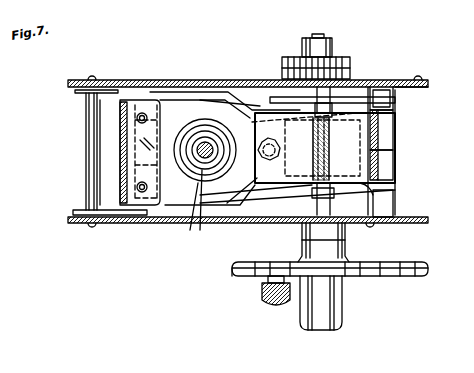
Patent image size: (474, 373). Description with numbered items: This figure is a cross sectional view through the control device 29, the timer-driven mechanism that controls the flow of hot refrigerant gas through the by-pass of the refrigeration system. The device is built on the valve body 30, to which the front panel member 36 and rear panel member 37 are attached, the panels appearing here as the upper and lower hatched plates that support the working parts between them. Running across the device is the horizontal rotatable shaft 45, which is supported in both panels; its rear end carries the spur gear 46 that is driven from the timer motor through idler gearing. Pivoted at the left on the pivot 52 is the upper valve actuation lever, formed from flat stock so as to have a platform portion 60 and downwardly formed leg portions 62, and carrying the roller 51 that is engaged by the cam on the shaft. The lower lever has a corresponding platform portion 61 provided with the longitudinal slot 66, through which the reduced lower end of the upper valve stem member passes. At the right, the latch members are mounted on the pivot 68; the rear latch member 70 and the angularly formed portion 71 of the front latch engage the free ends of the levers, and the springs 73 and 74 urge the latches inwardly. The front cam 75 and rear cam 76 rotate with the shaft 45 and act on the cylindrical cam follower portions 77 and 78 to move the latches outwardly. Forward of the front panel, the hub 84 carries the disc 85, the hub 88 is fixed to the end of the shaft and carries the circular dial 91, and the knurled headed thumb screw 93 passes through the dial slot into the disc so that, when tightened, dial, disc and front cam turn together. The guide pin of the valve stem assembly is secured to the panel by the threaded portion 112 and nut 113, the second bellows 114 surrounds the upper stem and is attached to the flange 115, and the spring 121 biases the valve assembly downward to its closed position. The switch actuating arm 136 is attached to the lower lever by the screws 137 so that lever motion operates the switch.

The control device 29 is at (108, 256).
The valve body 30 is at (397, 165).
The front panel member 36 is at (178, 226).
The rear panel member 37 is at (160, 78).
The rotatable shaft 45 is at (326, 38).
The spur gear 46 is at (346, 66).
The roller 51 is at (320, 180).
The pivot 52 is at (92, 158).
The platform portion 60 is at (393, 110).
The platform portion 61 is at (260, 190).
The leg portions 62 is at (138, 79).
The longitudinal slot 66 is at (225, 148).
The pivot 68 is at (386, 79).
The rear latch member 70 is at (394, 125).
The angularly formed portion 71 is at (333, 128).
The spring 73 is at (394, 173).
The spring 74 is at (396, 140).
The front cam 75 is at (302, 212).
The rear cam 76 is at (278, 98).
The cam follower portion 77 is at (396, 205).
The cam follower portion 78 is at (412, 92).
The hub 84 is at (346, 246).
The disc 85 is at (232, 264).
The hub 88 is at (330, 300).
The circular dial 91 is at (230, 274).
The knurled headed thumb screw 93 is at (270, 307).
The threaded portion 112 is at (262, 143).
The nut 113 is at (258, 90).
The second bellows 114 is at (150, 80).
The flange 115 is at (190, 230).
The spring 121 is at (200, 230).
The switch actuating arm 136 is at (120, 143).
The screws 137 is at (137, 119).